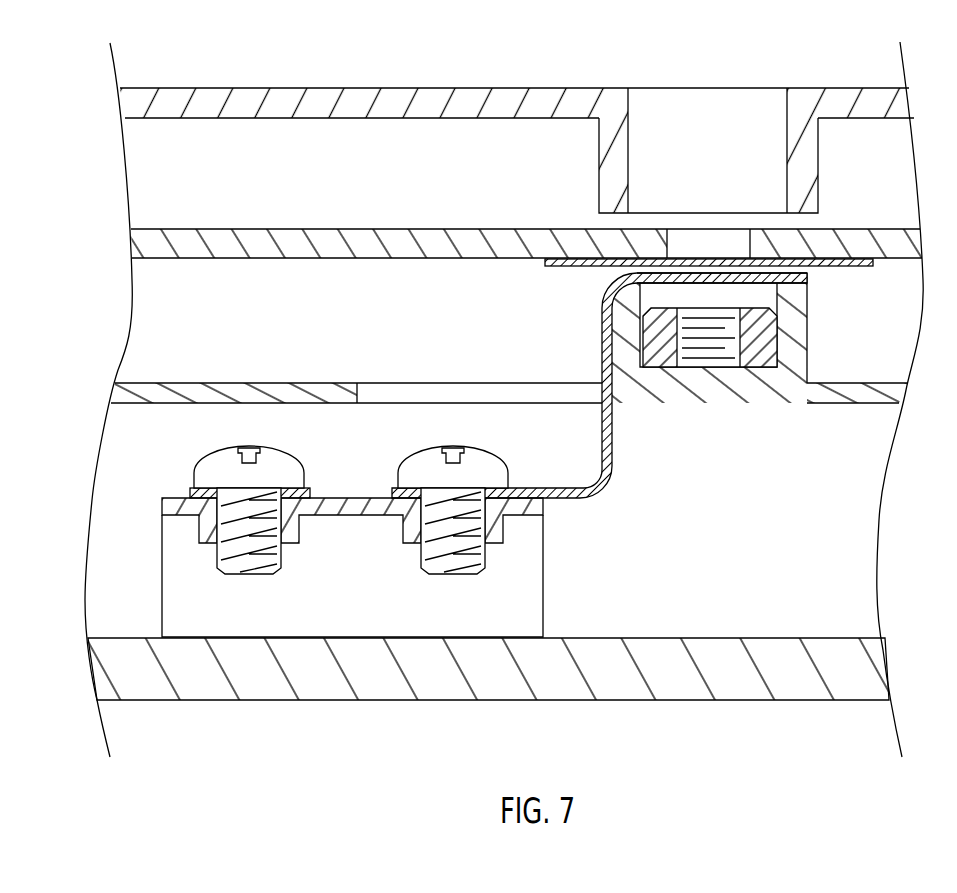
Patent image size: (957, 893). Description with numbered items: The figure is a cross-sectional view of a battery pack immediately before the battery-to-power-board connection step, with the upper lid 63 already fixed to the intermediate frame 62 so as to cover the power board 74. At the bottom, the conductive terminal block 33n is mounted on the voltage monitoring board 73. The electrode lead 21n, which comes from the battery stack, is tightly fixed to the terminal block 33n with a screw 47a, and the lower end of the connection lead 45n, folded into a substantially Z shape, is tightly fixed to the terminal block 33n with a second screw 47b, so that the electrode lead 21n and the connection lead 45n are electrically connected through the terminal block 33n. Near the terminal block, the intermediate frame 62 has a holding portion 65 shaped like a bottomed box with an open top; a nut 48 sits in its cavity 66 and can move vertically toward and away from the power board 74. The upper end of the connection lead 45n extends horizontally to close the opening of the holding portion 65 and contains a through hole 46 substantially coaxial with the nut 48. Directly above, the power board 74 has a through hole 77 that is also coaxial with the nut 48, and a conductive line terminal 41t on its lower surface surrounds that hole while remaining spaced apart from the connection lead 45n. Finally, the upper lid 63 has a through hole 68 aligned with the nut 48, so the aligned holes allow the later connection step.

The upper lid 63 is at (145, 100).
The through hole 68 is at (714, 107).
The power board 74 is at (155, 240).
The through hole 77 is at (702, 247).
The through hole 46 is at (721, 282).
The line terminal 41t is at (580, 268).
The cavity 66 is at (757, 293).
The nut 48 is at (757, 343).
The holding portion 65 is at (713, 392).
The intermediate frame 62 is at (140, 392).
The connection lead 45n is at (602, 442).
The screw 47a is at (213, 460).
The screw 47b is at (418, 458).
The electrode lead 21n is at (183, 493).
The terminal block 33n is at (165, 507).
The voltage monitoring board 73 is at (117, 676).